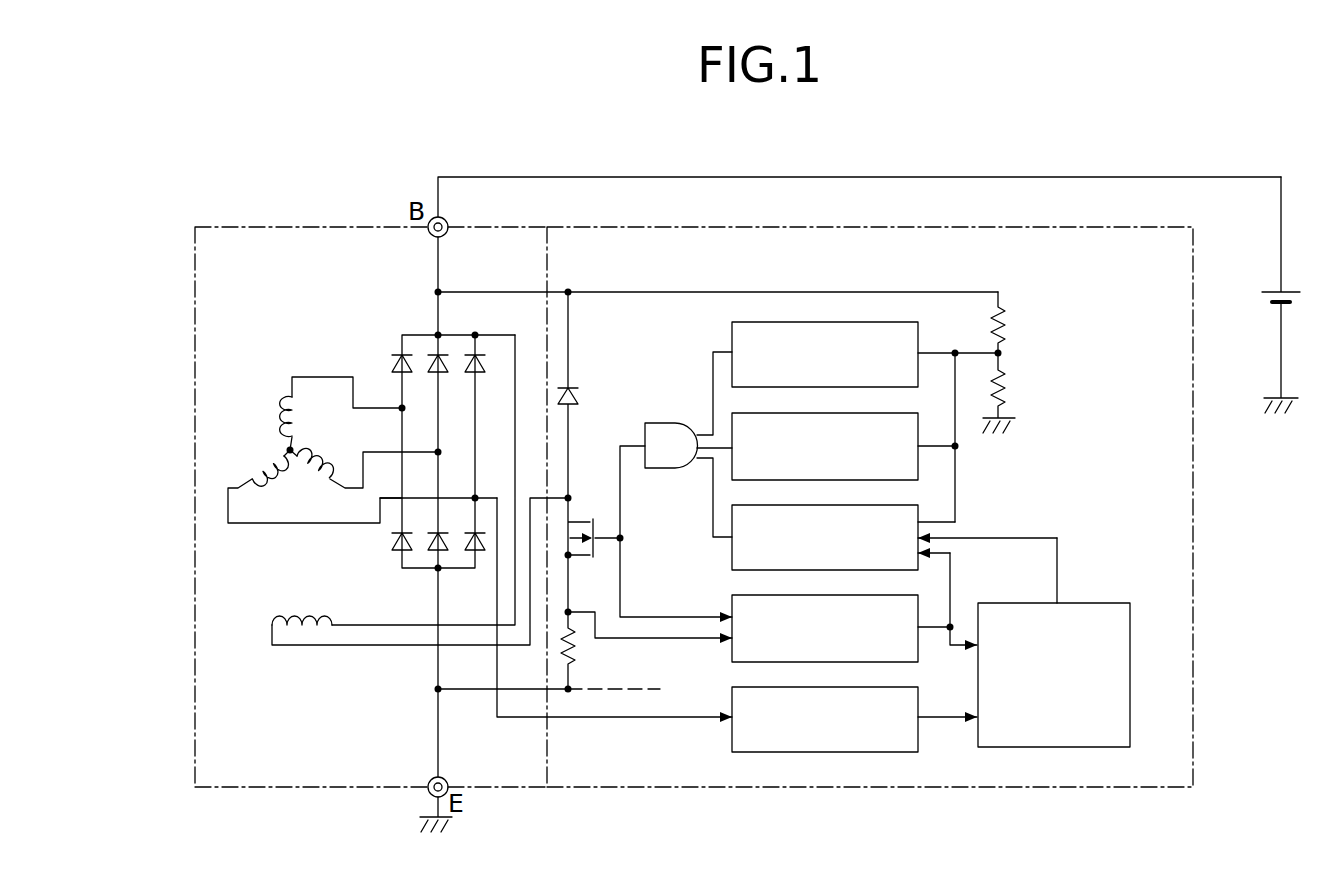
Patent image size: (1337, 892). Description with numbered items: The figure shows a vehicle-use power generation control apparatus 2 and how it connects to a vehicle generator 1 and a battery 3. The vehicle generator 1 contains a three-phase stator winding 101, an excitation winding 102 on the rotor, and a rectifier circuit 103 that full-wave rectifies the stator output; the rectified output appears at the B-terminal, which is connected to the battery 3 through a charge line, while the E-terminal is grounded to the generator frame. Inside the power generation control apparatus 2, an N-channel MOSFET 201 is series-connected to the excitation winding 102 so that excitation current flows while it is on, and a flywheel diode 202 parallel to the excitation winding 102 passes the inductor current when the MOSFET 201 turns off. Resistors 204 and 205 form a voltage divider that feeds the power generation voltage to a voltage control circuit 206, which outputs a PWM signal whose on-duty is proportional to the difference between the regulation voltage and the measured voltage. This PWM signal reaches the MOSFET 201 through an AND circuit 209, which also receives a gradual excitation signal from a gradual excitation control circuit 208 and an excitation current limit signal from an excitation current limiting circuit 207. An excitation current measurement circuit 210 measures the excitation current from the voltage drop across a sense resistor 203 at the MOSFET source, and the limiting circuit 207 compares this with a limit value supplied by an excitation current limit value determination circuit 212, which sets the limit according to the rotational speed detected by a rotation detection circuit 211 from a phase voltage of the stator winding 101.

The vehicle generator 1 is at (215, 227).
The vehicle-use power generation control apparatus 2 is at (1162, 213).
The battery 3 is at (1290, 292).
The three-phase stator winding 101 is at (283, 448).
The excitation winding 102 is at (296, 618).
The rectifier circuit 103 is at (402, 335).
The N-channel MOSFET 201 is at (578, 521).
The flywheel diode 202 is at (573, 387).
The sense resistor 203 is at (577, 650).
The resistor 204 is at (1010, 327).
The resistor 205 is at (1010, 388).
The voltage control circuit 206 is at (732, 340).
The excitation current limiting circuit 207 is at (918, 511).
The gradual excitation control circuit 208 is at (918, 466).
The AND circuit 209 is at (668, 423).
The excitation current measurement circuit 210 is at (732, 600).
The rotation detection circuit 211 is at (918, 736).
The excitation current limit value determination circuit 212 is at (1102, 603).